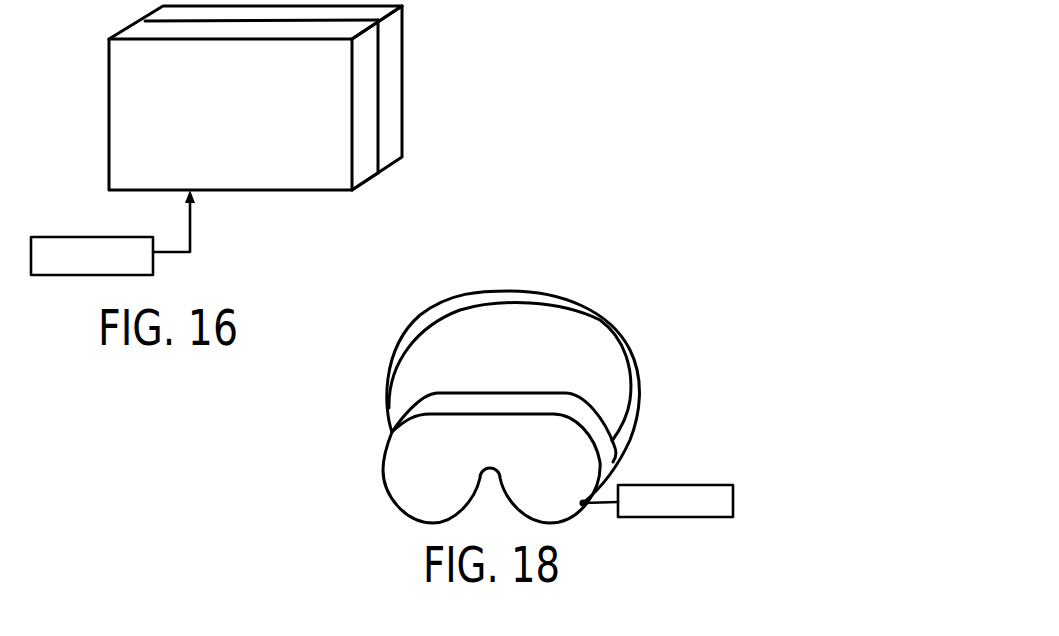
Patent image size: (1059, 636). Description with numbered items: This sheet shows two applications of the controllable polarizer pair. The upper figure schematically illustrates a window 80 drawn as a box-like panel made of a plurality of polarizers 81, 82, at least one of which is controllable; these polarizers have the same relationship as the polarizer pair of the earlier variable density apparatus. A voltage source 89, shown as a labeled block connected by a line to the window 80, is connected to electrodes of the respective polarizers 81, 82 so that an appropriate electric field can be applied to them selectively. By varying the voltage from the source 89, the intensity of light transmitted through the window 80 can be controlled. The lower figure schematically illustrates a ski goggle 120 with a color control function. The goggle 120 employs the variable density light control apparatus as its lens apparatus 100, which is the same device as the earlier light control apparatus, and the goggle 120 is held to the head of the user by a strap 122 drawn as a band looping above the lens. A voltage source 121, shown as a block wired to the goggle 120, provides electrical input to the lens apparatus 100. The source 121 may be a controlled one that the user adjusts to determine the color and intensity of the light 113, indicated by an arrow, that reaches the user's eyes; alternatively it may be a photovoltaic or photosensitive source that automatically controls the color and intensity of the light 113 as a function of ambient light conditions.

In FIG. 16, the window 80 is at (357, 212).
In FIG. 16, the polarizer 81 is at (367, 167).
In FIG. 16, the polarizer 82 is at (393, 82).
In FIG. 16, the voltage source 89 is at (90, 275).
In FIG. 18, the lens apparatus 100 is at (423, 487).
In FIG. 18, the light 113 is at (500, 392).
In FIG. 18, the ski goggle 120 is at (579, 529).
In FIG. 18, the voltage source 121 is at (693, 517).
In FIG. 18, the strap 122 is at (563, 296).